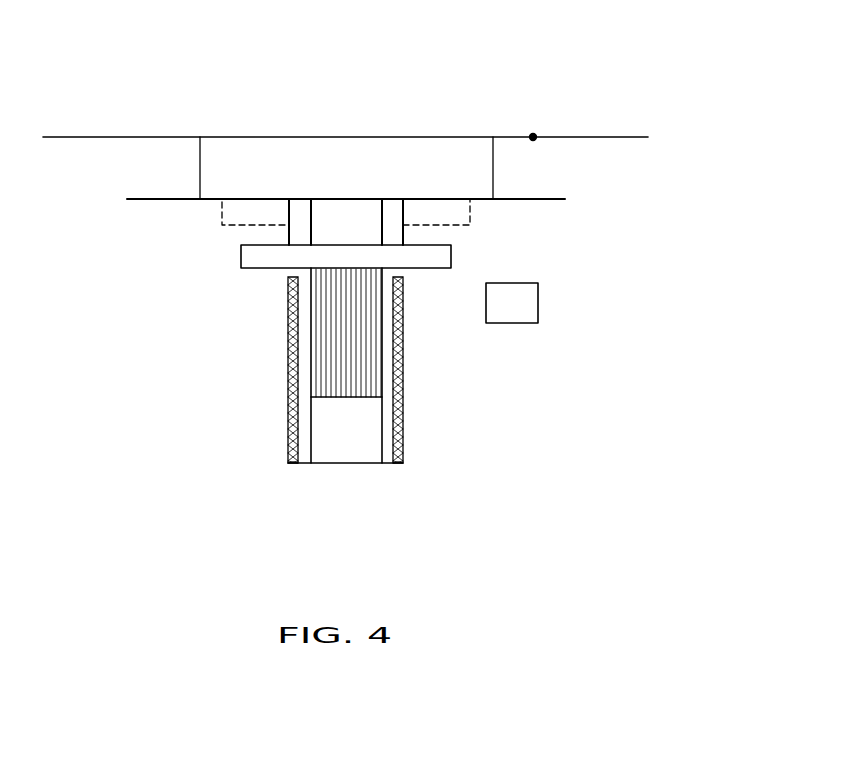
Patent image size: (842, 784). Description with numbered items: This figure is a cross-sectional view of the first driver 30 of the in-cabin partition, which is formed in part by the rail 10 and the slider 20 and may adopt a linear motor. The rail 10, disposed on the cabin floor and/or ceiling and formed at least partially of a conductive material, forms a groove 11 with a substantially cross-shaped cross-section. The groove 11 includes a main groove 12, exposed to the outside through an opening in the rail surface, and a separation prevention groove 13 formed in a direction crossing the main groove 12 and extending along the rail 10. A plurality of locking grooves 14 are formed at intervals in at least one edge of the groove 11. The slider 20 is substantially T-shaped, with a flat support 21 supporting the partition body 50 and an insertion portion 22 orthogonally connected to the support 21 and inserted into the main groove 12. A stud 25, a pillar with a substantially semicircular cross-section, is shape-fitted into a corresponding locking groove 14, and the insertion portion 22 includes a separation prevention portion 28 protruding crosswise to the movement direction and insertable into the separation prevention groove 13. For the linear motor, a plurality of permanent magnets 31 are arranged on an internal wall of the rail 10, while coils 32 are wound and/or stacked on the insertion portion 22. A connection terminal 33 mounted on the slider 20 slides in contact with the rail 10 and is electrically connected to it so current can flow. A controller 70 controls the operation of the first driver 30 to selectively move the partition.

The rail 10 is at (262, 419).
The groove 11 is at (293, 182).
The main groove 12 is at (386, 216).
The separation prevention groove 13 is at (451, 255).
The locking grooves 14 is at (471, 212).
The slider 20 is at (180, 107).
The support 21 is at (343, 155).
The insertion portion 22 is at (345, 233).
The stud 25 is at (436, 212).
The separation prevention portion 28 is at (257, 258).
The first driver 30 is at (492, 347).
The permanent magnets 31 is at (405, 418).
The coils 32 is at (360, 345).
The connection terminal 33 is at (347, 430).
The partition body 50 is at (533, 134).
The controller 70 is at (356, 303).